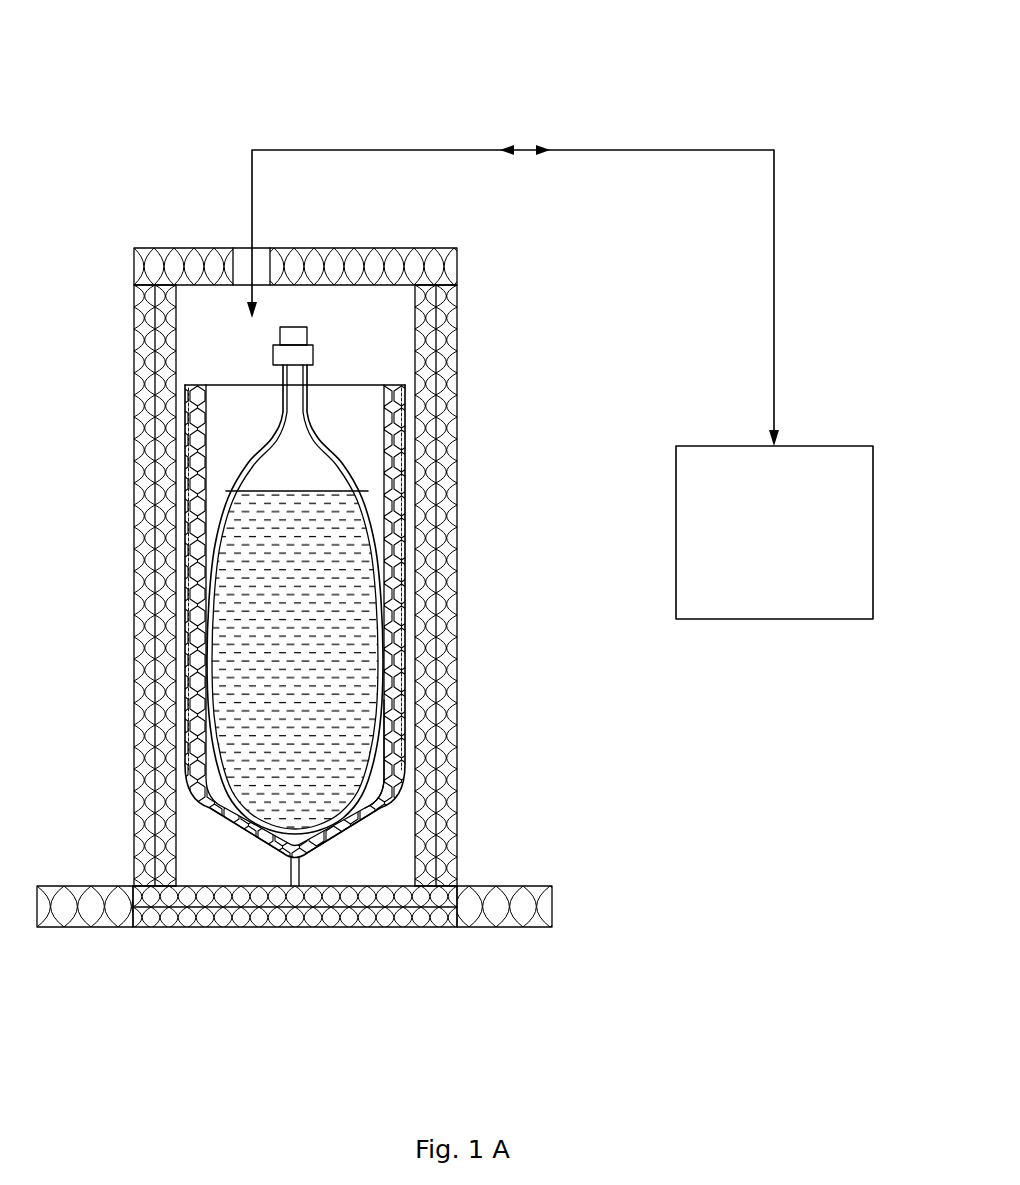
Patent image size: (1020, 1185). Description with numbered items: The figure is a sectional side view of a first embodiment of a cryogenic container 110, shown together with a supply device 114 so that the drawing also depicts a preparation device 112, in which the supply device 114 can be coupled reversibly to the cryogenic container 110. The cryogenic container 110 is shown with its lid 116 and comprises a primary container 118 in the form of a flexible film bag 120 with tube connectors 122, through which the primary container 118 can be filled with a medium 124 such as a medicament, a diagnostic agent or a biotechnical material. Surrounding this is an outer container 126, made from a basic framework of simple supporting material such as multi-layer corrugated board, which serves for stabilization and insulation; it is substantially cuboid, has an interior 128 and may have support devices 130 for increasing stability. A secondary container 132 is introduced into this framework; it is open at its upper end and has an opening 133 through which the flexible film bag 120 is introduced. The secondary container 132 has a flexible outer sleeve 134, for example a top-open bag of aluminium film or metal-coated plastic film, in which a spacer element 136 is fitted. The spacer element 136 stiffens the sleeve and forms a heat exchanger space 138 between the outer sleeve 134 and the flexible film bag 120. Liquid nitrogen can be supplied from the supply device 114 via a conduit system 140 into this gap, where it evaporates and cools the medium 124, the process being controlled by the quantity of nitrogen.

The cryogenic container 110 is at (500, 262).
The preparation device 112 is at (680, 128).
The supply device 114 is at (794, 545).
The lid 116 is at (220, 247).
The primary container 118 is at (350, 473).
The flexible film bag 120 is at (357, 491).
The tube connectors 122 is at (313, 354).
The medium 124 is at (350, 602).
The outer container 126 is at (452, 650).
The interior 128 is at (223, 312).
The support devices 130 is at (90, 917).
The secondary container 132 is at (237, 836).
The opening 133 is at (238, 383).
The outer sleeve 134 is at (337, 840).
The spacer element 136 is at (360, 820).
The heat exchanger space 138 is at (392, 771).
The conduit system 140 is at (410, 148).